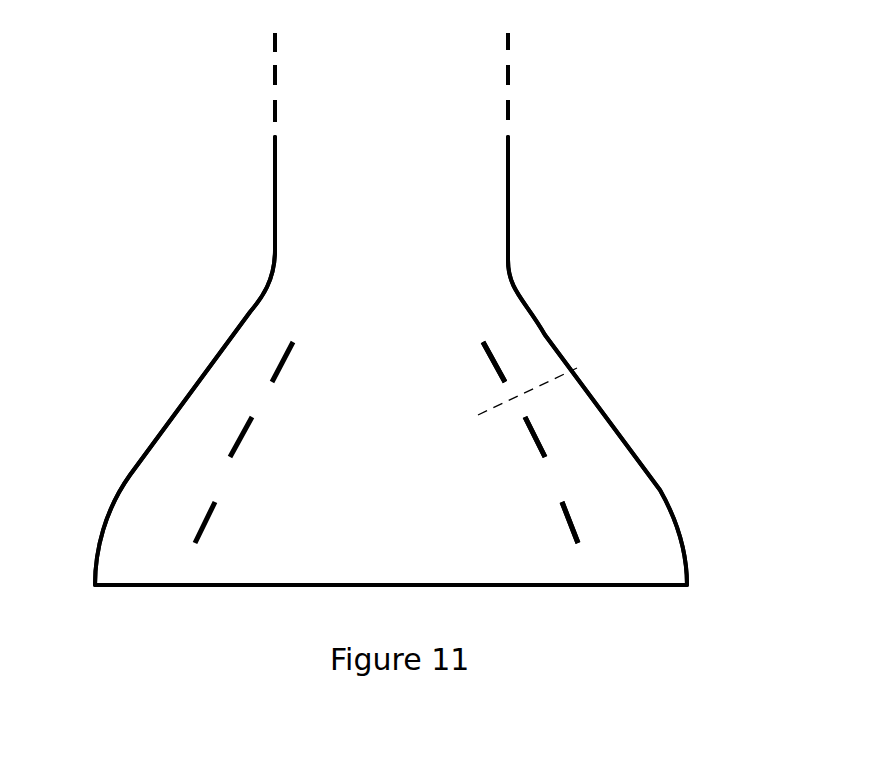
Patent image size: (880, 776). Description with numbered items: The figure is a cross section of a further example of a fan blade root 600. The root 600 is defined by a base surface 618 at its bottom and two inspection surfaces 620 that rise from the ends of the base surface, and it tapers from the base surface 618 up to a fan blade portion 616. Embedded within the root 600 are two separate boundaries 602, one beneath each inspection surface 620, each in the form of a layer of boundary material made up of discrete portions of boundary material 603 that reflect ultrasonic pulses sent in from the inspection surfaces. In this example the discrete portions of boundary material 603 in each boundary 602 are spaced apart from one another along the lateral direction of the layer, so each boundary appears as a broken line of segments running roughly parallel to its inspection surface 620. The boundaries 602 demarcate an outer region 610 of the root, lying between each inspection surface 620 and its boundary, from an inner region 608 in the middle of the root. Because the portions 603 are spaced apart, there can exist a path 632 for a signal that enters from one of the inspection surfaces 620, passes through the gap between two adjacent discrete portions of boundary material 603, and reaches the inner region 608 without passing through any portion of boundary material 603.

The fan blade root 600 is at (538, 353).
The boundary 602 is at (306, 322).
The discrete portions of boundary material 603 is at (557, 510).
The inner region 608 is at (343, 488).
The outer region 610 is at (597, 452).
The fan blade portion 616 is at (445, 238).
The base surface 618 is at (235, 585).
The inspection surfaces 620 is at (197, 385).
The path 632 is at (546, 384).